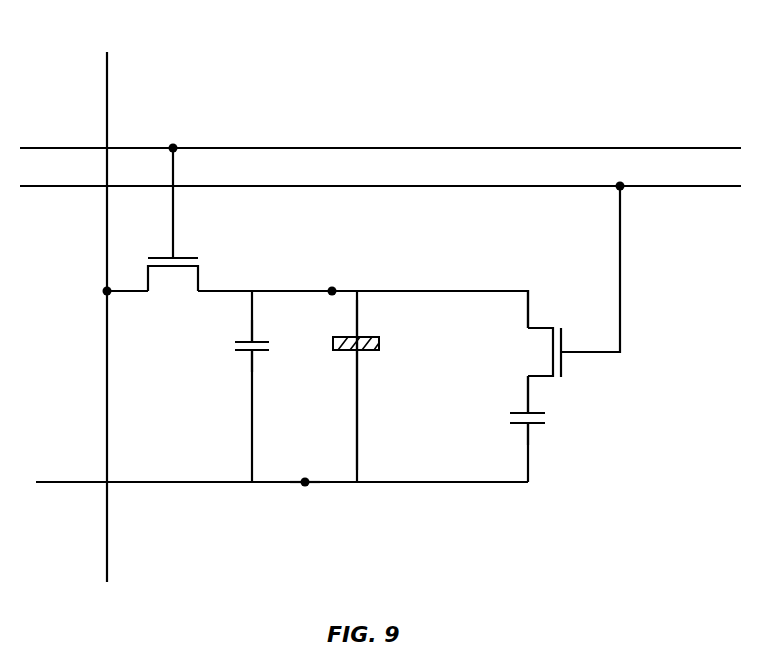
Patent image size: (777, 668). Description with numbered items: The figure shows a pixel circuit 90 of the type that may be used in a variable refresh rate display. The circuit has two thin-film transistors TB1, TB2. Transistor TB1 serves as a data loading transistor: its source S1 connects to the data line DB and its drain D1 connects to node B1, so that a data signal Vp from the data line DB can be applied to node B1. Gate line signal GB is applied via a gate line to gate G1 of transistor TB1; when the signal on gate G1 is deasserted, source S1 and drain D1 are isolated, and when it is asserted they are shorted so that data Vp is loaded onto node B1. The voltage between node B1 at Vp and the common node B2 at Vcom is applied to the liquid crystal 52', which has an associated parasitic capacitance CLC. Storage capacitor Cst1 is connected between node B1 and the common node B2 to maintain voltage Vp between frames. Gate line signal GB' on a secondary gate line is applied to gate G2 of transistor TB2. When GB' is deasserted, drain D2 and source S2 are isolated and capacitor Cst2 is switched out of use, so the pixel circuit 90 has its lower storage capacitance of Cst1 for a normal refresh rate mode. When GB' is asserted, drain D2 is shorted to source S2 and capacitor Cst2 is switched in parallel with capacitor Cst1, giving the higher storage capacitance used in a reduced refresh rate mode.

The pixel circuit 90 is at (566, 78).
The liquid crystal 52' is at (383, 334).
The data line DB is at (124, 315).
The gate line signal GB is at (380, 134).
The gate line signal on secondary gate line GB' is at (380, 200).
The common voltage Vcom is at (276, 468).
The thin-film transistor TB1 is at (173, 288).
The gate of transistor TB1 G1 is at (189, 201).
The source of transistor TB1 S1 is at (126, 280).
The drain of transistor TB1 D1 is at (225, 278).
The data signal Vp is at (292, 277).
The node B1 is at (337, 280).
The storage capacitor Cst1 is at (226, 346).
The parasitic capacitance CLC is at (377, 385).
The source of transistor TB2 S2 is at (524, 296).
The thin-film transistor TB2 is at (525, 352).
The gate of transistor TB2 G2 is at (593, 267).
The drain of transistor TB2 D2 is at (545, 394).
The capacitor Cst2 is at (553, 427).
The common node B2 is at (305, 496).